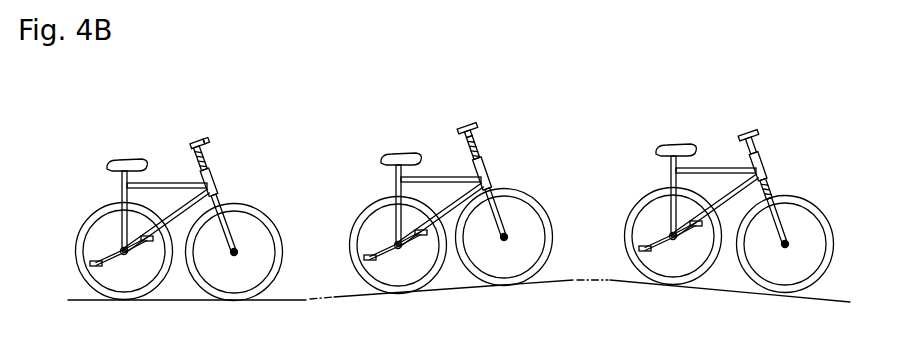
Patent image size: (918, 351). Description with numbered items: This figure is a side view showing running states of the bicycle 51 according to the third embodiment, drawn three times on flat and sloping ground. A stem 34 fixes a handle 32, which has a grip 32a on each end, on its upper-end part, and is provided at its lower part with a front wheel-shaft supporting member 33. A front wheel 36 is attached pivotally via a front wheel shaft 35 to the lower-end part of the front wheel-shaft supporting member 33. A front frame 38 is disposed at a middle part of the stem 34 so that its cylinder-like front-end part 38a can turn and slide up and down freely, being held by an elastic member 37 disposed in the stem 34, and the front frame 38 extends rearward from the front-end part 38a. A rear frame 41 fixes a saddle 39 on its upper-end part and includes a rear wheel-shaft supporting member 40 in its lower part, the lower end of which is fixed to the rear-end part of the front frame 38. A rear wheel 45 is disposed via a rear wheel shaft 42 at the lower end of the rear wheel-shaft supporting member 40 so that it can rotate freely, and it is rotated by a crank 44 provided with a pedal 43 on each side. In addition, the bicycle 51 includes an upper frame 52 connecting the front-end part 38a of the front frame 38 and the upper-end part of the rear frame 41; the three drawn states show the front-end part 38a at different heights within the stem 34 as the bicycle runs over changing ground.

The handle 32 is at (206, 141).
The grip 32a is at (199, 142).
The front wheel-shaft supporting member 33 is at (244, 218).
The stem 34 is at (210, 151).
The front wheel shaft 35 is at (238, 251).
The front wheel 36 is at (282, 257).
The elastic member 37 is at (217, 197).
The front frame 38 is at (175, 183).
The front-end part 38a is at (213, 172).
The saddle 39 is at (122, 159).
The rear wheel-shaft supporting member 40 is at (118, 225).
The rear frame 41 is at (121, 194).
The rear wheel shaft 42 is at (124, 255).
The pedal 43 is at (92, 267).
The crank 44 is at (92, 260).
The rear wheel 45 is at (84, 292).
The bicycle 51 is at (189, 122).
The upper frame 52 is at (152, 183).